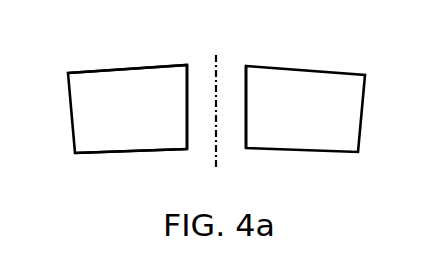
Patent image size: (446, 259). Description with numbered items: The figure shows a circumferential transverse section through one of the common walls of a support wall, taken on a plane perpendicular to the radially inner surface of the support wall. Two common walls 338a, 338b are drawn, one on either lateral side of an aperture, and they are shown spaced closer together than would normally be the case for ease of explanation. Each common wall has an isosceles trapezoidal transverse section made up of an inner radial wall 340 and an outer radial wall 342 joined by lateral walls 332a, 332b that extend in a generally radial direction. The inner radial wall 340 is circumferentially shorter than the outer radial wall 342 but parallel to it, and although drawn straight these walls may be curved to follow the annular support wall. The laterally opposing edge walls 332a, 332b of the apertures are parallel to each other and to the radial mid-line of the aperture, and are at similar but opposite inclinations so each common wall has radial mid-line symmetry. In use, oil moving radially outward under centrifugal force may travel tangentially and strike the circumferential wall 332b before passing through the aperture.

The common wall 338a is at (163, 117).
The common wall 338b is at (337, 122).
The outer radial wall 342 is at (97, 70).
The inner radial wall 340 is at (88, 155).
The lateral wall 332a is at (187, 128).
The lateral wall 332b is at (246, 128).